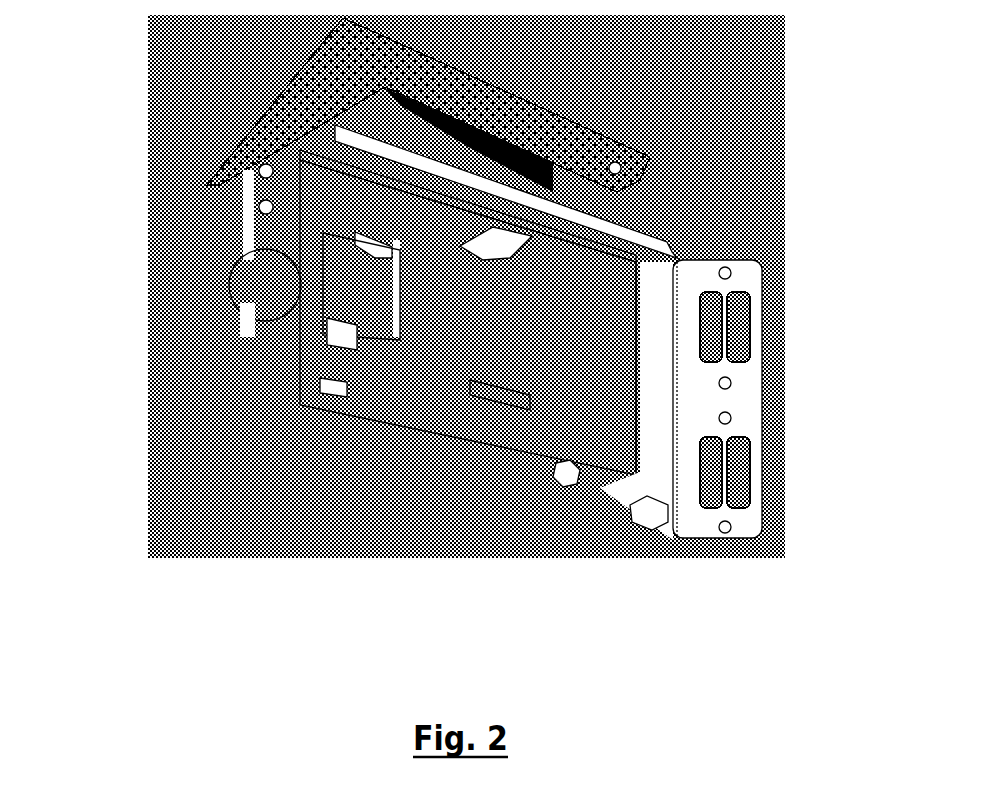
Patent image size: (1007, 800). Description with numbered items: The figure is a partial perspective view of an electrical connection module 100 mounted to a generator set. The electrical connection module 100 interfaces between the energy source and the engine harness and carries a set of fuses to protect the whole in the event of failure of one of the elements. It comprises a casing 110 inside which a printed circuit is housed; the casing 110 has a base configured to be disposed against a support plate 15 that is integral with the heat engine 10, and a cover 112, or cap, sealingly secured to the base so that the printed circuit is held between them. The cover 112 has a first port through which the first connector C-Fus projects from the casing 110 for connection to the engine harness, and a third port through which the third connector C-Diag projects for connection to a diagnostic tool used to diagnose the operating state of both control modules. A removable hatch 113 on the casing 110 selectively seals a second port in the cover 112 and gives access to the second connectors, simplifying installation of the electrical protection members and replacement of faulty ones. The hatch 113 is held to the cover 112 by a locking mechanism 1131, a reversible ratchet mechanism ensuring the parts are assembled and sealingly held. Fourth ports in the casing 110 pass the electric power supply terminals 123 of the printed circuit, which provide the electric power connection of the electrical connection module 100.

The heat engine 10 is at (722, 46).
The electrical connection module 100 is at (208, 333).
The casing 110 is at (582, 425).
The cover 112 is at (628, 313).
The removable hatch 113 is at (502, 387).
The locking mechanism 1131 is at (483, 245).
The electric power supply terminals 123 is at (566, 484).
The support plate 15 is at (664, 508).
The third connector C-Diag is at (265, 305).
The first connector C-Fus is at (370, 325).